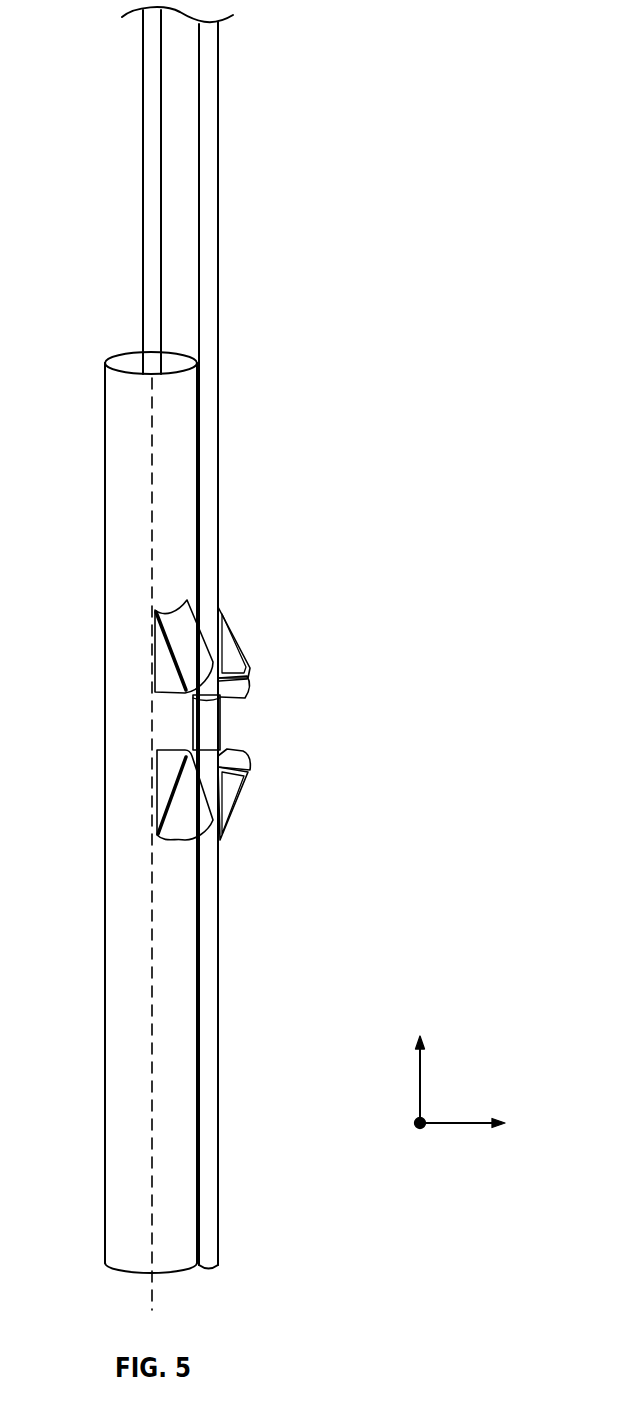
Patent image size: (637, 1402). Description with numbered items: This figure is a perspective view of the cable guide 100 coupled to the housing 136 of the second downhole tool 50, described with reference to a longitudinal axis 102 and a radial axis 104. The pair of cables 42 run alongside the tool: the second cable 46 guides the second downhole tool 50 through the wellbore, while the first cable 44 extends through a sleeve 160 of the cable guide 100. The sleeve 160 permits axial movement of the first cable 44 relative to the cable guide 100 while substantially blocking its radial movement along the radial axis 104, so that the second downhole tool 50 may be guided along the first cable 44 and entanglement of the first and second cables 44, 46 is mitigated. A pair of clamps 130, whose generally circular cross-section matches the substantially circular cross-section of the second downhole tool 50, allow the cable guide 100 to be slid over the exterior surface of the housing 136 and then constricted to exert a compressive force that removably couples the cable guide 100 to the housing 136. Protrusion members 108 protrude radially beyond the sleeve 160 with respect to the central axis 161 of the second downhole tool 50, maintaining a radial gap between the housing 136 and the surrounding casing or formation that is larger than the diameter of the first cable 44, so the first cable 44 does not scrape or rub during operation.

The pair of cables 42 is at (243, 43).
The first cable 44 is at (212, 165).
The second cable 46 is at (150, 226).
The second downhole tool 50 is at (128, 926).
The cable guide 100 is at (113, 735).
The longitudinal axis 102 is at (423, 1080).
The radial axis 104 is at (465, 1122).
The protrusion members 108 is at (183, 623).
The clamps 130 is at (130, 598).
The housing 136 is at (108, 1070).
The sleeve 160 is at (213, 712).
The central axis 161 is at (148, 1284).